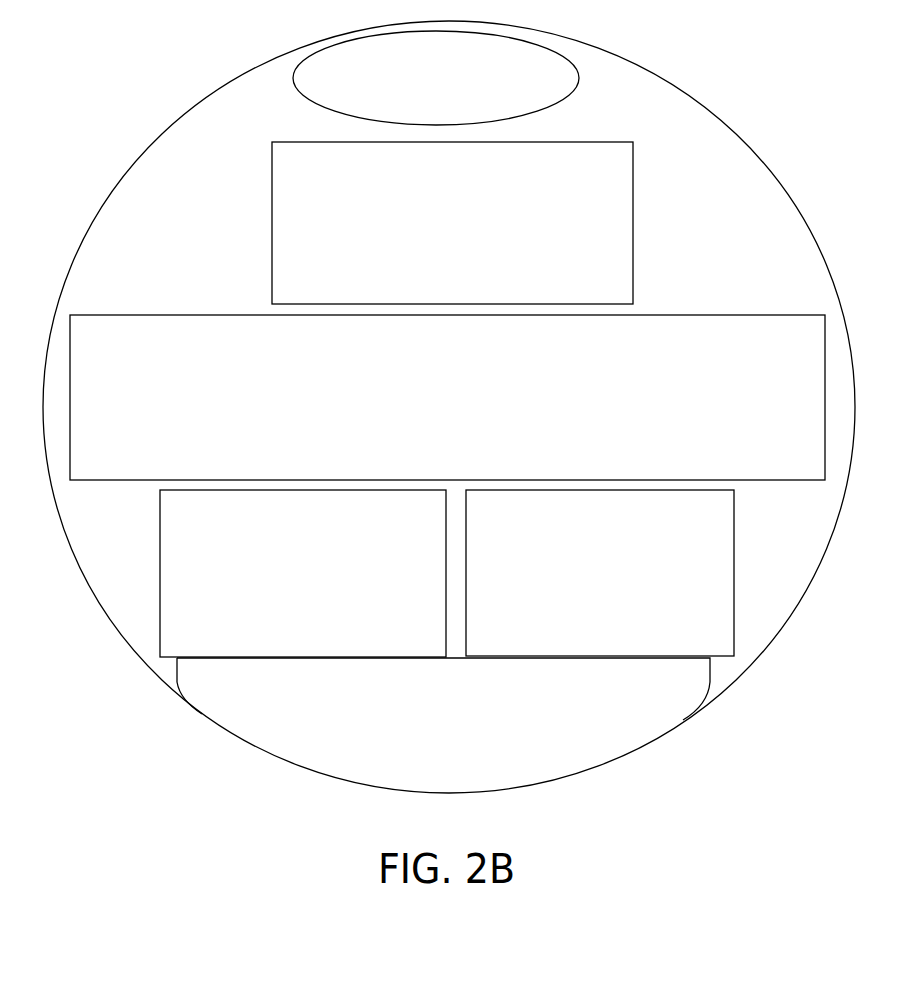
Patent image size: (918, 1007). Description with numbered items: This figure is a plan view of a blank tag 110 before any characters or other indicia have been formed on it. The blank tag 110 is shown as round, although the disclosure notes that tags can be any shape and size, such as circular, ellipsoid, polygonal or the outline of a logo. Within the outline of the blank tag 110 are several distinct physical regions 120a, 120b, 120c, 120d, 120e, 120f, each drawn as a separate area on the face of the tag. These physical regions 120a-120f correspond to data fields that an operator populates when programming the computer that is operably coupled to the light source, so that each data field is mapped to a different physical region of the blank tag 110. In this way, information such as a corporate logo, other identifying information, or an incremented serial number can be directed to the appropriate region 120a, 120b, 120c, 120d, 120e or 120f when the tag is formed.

The blank tag 110 is at (660, 36).
The physical region of the blank tag 120a is at (192, 315).
The physical region of the blank tag 120b is at (634, 224).
The physical region of the blank tag 120c is at (582, 78).
The physical region of the blank tag 120d is at (160, 573).
The physical region of the blank tag 120e is at (736, 573).
The physical region of the blank tag 120f is at (178, 680).